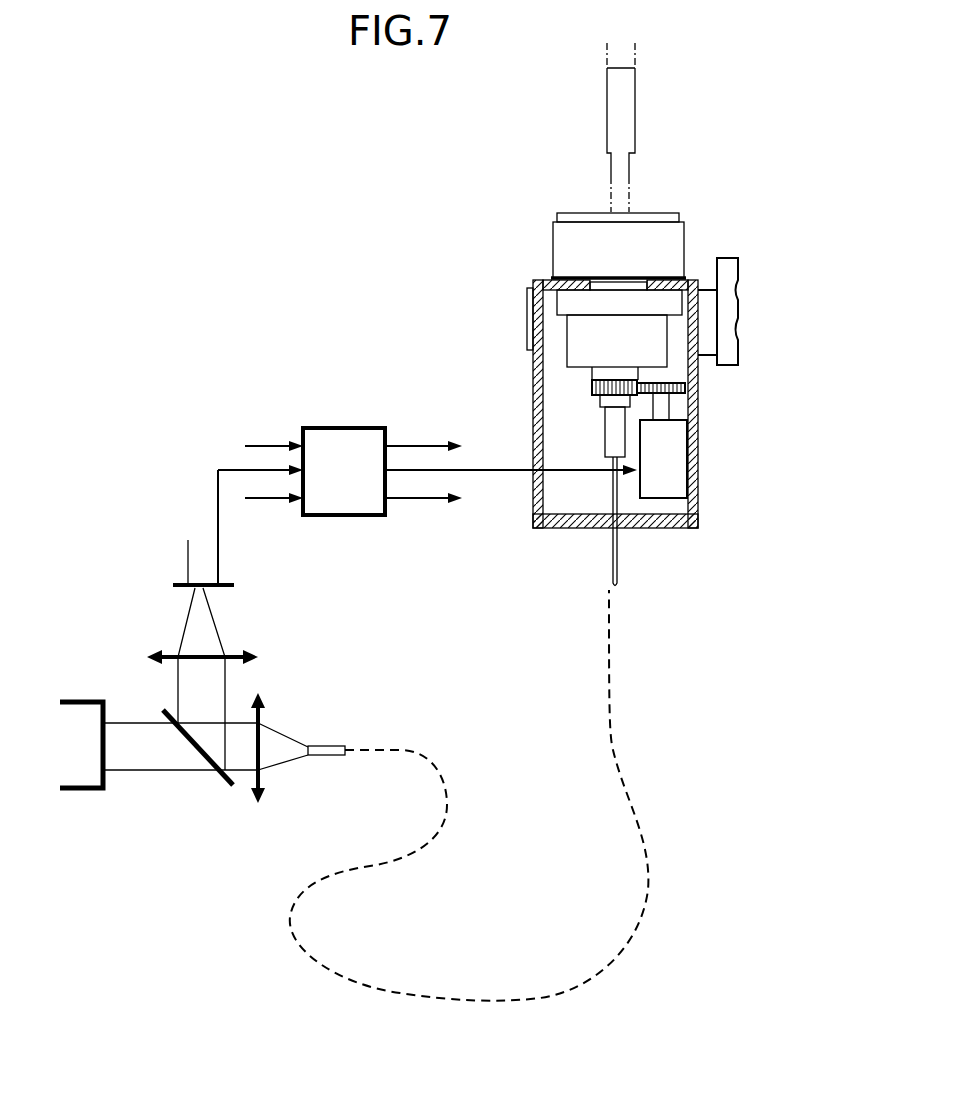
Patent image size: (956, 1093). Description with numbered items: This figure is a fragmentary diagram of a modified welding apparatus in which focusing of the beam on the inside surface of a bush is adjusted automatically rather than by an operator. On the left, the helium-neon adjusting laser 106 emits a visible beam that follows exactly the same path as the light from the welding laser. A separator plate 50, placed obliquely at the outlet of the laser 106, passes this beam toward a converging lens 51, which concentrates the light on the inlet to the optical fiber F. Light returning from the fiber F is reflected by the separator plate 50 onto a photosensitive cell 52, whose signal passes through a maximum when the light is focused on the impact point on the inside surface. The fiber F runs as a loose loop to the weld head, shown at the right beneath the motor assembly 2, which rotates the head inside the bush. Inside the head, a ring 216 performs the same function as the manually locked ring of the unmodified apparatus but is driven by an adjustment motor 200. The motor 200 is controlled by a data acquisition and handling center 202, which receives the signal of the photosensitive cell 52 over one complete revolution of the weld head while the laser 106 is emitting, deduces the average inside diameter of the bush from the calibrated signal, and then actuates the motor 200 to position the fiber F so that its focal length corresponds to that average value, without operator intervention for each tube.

The motor assembly 2 is at (547, 258).
The data acquisition and handling center 202 is at (345, 442).
The ring 216 is at (597, 373).
The adjustment motor 200 is at (668, 475).
The photosensitive cell 52 is at (188, 590).
The adjusting laser 106 is at (95, 710).
The converging lens 51 is at (262, 722).
The separator plate 50 is at (222, 782).
The optical fiber F is at (405, 750).